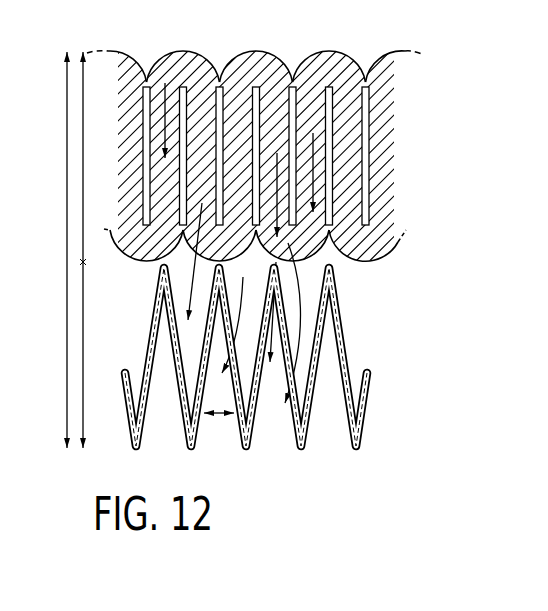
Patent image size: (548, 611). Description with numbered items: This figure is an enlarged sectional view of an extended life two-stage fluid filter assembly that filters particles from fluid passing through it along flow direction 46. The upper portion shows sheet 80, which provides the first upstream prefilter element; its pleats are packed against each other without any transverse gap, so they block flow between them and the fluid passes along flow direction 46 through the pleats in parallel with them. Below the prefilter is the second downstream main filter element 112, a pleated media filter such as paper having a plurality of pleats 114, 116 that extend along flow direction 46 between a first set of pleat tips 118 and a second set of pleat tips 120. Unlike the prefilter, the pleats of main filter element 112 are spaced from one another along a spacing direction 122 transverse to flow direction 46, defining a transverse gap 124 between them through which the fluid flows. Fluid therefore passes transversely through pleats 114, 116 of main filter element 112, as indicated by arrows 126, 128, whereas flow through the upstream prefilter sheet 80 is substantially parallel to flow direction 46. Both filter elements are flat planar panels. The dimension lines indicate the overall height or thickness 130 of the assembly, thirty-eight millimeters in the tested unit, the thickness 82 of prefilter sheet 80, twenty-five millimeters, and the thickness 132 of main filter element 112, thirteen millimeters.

The flow direction 46 is at (242, 148).
The sheet 80 is at (388, 116).
The thickness of prefilter 82 is at (83, 126).
The height or thickness 130 is at (66, 320).
The thickness of main filter 132 is at (84, 338).
The main filter element 112 is at (363, 327).
The pleat 114 is at (293, 440).
The pleat 116 is at (259, 437).
The first set of pleat tips 118 is at (337, 265).
The second set of pleat tips 120 is at (290, 430).
The spacing direction 122 is at (218, 414).
The transverse gap 124 is at (247, 380).
The arrow 126 is at (305, 303).
The arrow 128 is at (273, 348).